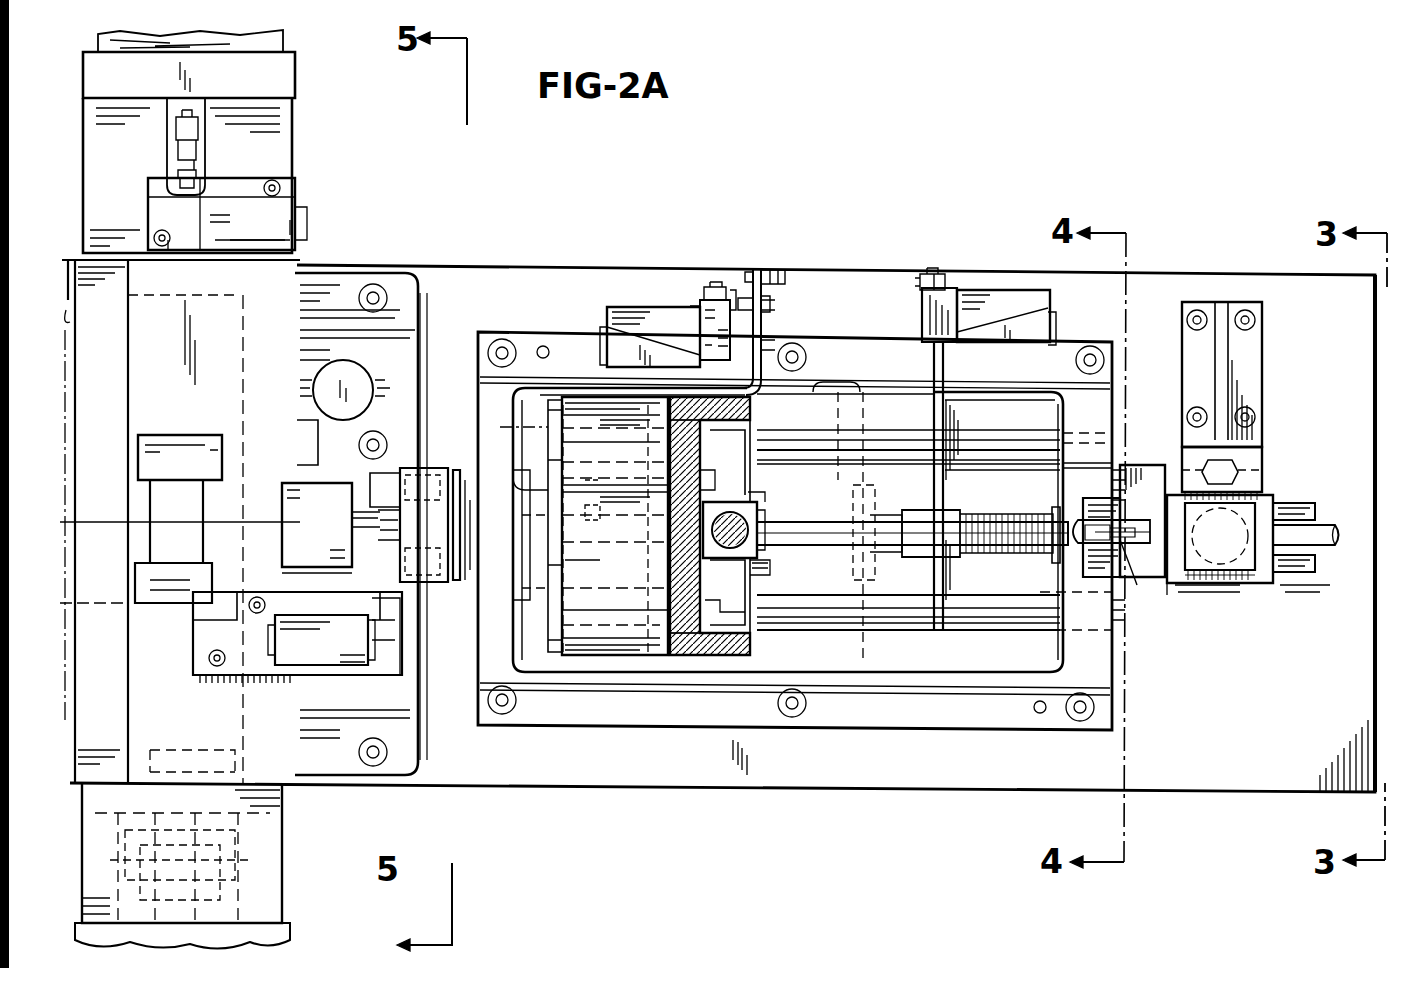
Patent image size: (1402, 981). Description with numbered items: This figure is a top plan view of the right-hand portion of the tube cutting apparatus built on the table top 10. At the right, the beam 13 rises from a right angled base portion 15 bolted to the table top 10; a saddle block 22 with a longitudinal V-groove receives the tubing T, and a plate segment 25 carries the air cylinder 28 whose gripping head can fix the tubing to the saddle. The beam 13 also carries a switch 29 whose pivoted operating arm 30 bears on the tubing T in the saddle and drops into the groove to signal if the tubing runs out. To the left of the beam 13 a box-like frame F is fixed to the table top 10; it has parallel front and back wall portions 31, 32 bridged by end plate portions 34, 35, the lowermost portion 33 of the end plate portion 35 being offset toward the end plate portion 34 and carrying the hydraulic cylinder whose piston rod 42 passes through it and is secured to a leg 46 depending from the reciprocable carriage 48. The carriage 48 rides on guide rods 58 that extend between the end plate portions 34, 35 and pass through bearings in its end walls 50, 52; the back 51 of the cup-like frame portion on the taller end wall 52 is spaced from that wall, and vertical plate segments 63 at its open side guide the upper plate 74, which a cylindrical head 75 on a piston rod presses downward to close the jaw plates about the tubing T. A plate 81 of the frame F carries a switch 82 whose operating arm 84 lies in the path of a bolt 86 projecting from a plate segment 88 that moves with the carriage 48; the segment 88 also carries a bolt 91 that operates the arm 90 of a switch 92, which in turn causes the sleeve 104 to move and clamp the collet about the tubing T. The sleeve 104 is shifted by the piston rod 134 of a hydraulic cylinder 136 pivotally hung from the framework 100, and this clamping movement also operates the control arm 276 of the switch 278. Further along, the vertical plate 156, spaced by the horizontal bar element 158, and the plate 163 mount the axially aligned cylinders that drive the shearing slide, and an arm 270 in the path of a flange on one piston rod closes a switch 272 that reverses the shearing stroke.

The table top 10 is at (1262, 673).
The beam 13 is at (1262, 455).
The base portion 15 is at (1262, 370).
The saddle block 22 is at (1293, 505).
The plate segment 25 is at (1178, 585).
The air cylinder 28 is at (1232, 549).
The switch 29 is at (1158, 497).
The operating arm 30 is at (1115, 554).
The front wall portion 31 is at (765, 668).
The back wall portion 32 is at (882, 385).
The lowermost portion 33 is at (835, 585).
The end plate portion 34 is at (492, 598).
The end plate portion 35 is at (1095, 626).
The piston rod 42 is at (815, 540).
The leg 46 is at (530, 495).
The carriage 48 is at (748, 416).
The end wall 50 is at (530, 557).
The back 51 is at (686, 527).
The end wall 52 is at (765, 580).
The guide rods 58 is at (1010, 440).
The plate segments 63 is at (750, 470).
The upper plate 74 is at (768, 492).
The cylindrical head 75 is at (760, 512).
The plate 81 is at (934, 410).
The switch 82 is at (1005, 298).
The operating arm 84 is at (933, 268).
The bolt 86 is at (783, 268).
The plate segment 88 is at (765, 322).
The operating arm 90 is at (705, 295).
The bolt 91 is at (770, 304).
The switch 92 is at (637, 312).
The framework 100 is at (307, 278).
The sleeve 104 is at (442, 470).
The piston rod 134 is at (360, 526).
The hydraulic cylinder 136 is at (250, 500).
The plate 156 is at (260, 86).
The bar element 158 is at (293, 128).
The plate 163 is at (278, 938).
The arm 270 is at (176, 135).
The switch 272 is at (240, 212).
The control arm 276 is at (385, 607).
The switch 278 is at (340, 656).
The frame F is at (908, 685).
The tubing T is at (1332, 525).